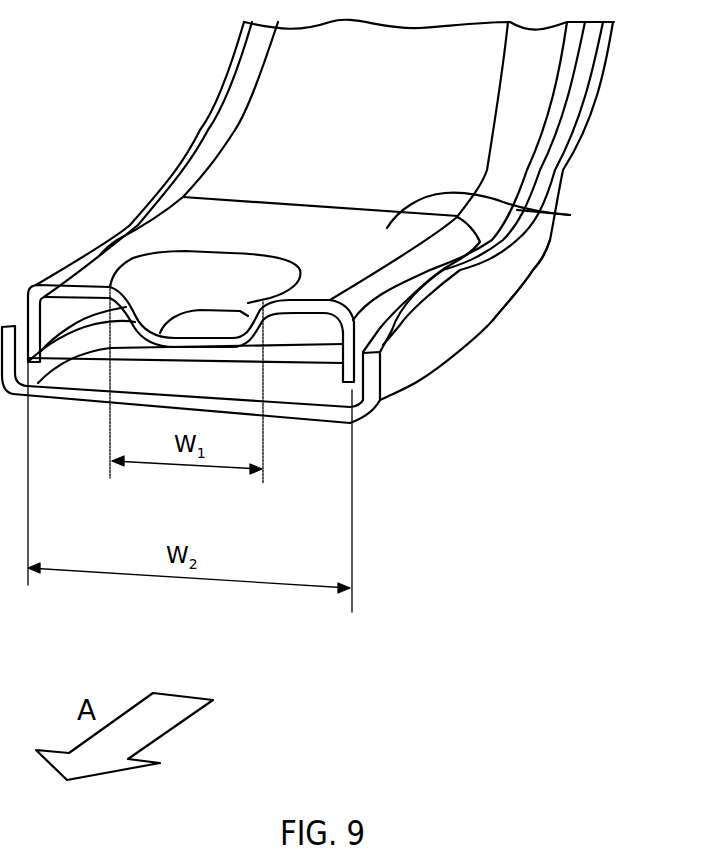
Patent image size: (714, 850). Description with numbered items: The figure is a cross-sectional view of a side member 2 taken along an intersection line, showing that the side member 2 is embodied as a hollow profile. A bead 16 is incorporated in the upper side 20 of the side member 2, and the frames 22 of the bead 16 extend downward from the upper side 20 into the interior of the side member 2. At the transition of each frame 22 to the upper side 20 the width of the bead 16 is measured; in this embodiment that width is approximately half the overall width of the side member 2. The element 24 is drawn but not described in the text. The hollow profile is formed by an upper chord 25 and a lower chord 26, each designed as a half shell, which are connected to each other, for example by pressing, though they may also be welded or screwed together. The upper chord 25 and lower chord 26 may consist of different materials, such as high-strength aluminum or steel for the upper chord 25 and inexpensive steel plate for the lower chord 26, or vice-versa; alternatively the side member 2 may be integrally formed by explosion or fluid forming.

The side member 2 is at (120, 145).
The bead 16 is at (192, 284).
The upper side 20 is at (259, 232).
The frames 22 is at (110, 328).
The bottom wall 24 is at (186, 376).
The upper chord 25 is at (458, 216).
The lower chord 26 is at (487, 304).